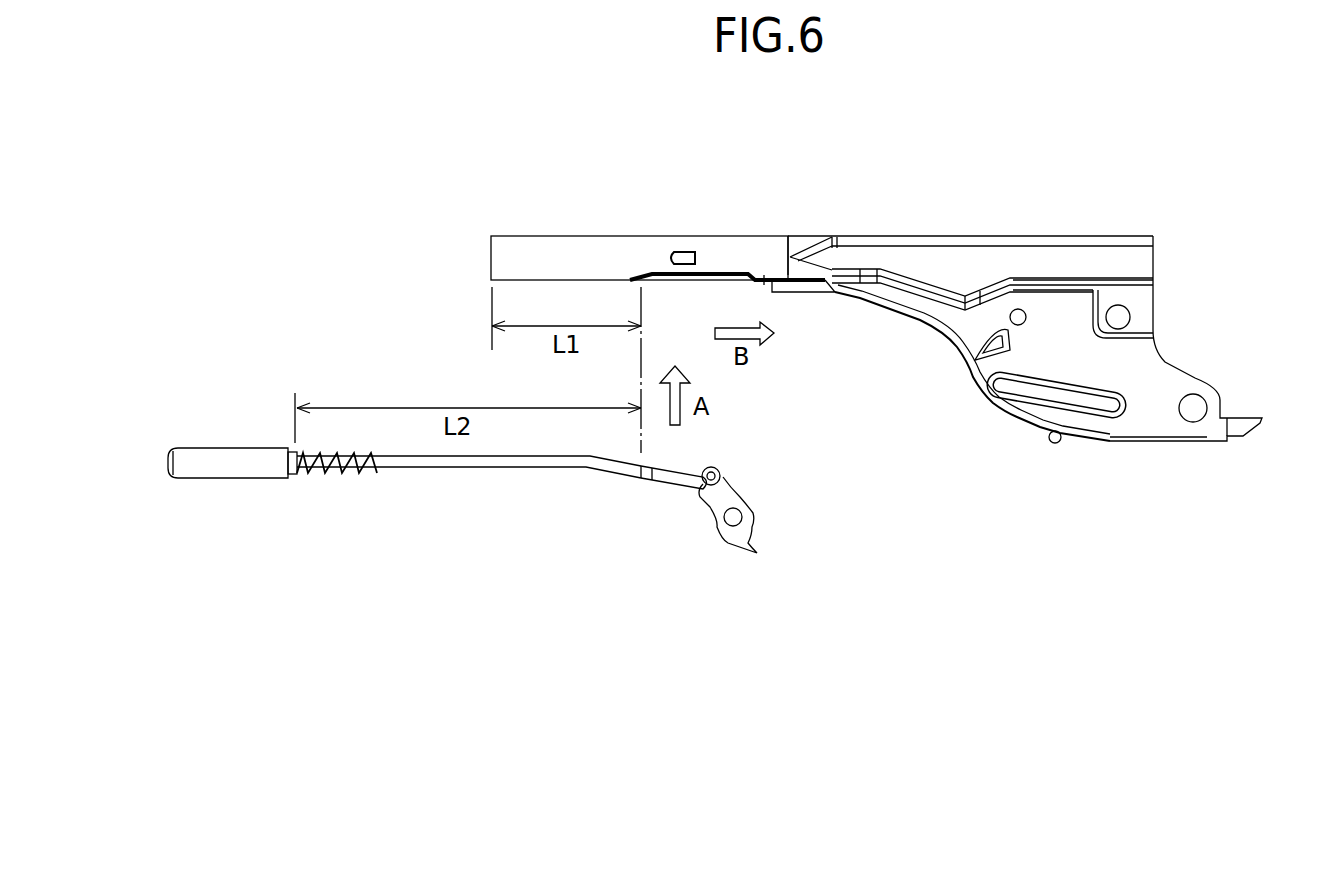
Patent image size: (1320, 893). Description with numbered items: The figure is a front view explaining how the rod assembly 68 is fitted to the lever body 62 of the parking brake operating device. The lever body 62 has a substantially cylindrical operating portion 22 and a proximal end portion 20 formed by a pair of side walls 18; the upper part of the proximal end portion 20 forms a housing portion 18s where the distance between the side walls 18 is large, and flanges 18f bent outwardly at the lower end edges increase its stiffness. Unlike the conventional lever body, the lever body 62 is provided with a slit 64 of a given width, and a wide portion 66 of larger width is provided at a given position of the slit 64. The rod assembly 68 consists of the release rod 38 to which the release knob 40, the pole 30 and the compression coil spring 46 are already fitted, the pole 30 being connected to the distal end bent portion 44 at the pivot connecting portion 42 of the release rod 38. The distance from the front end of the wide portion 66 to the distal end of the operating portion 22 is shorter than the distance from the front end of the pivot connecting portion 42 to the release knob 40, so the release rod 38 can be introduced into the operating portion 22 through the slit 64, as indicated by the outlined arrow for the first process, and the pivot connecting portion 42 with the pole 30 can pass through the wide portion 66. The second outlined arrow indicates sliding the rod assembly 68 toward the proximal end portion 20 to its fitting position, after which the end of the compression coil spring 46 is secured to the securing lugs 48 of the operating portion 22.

The side walls 18 is at (1140, 420).
The housing portion 18s is at (956, 263).
The flanges 18f is at (925, 320).
The proximal end portion 20 is at (990, 422).
The operating portion 22 is at (585, 255).
The pole 30 is at (732, 532).
The release rod 38 is at (476, 469).
The release knob 40 is at (233, 462).
The pivot connecting portion 42 is at (672, 479).
The distal end bent portion 44 is at (717, 468).
The compression coil spring 46 is at (328, 470).
The securing lugs 48 is at (683, 250).
The lever body 62 is at (1067, 199).
The slit 64 is at (526, 290).
The wide portion 66 is at (681, 288).
The rod assembly 68 is at (384, 537).